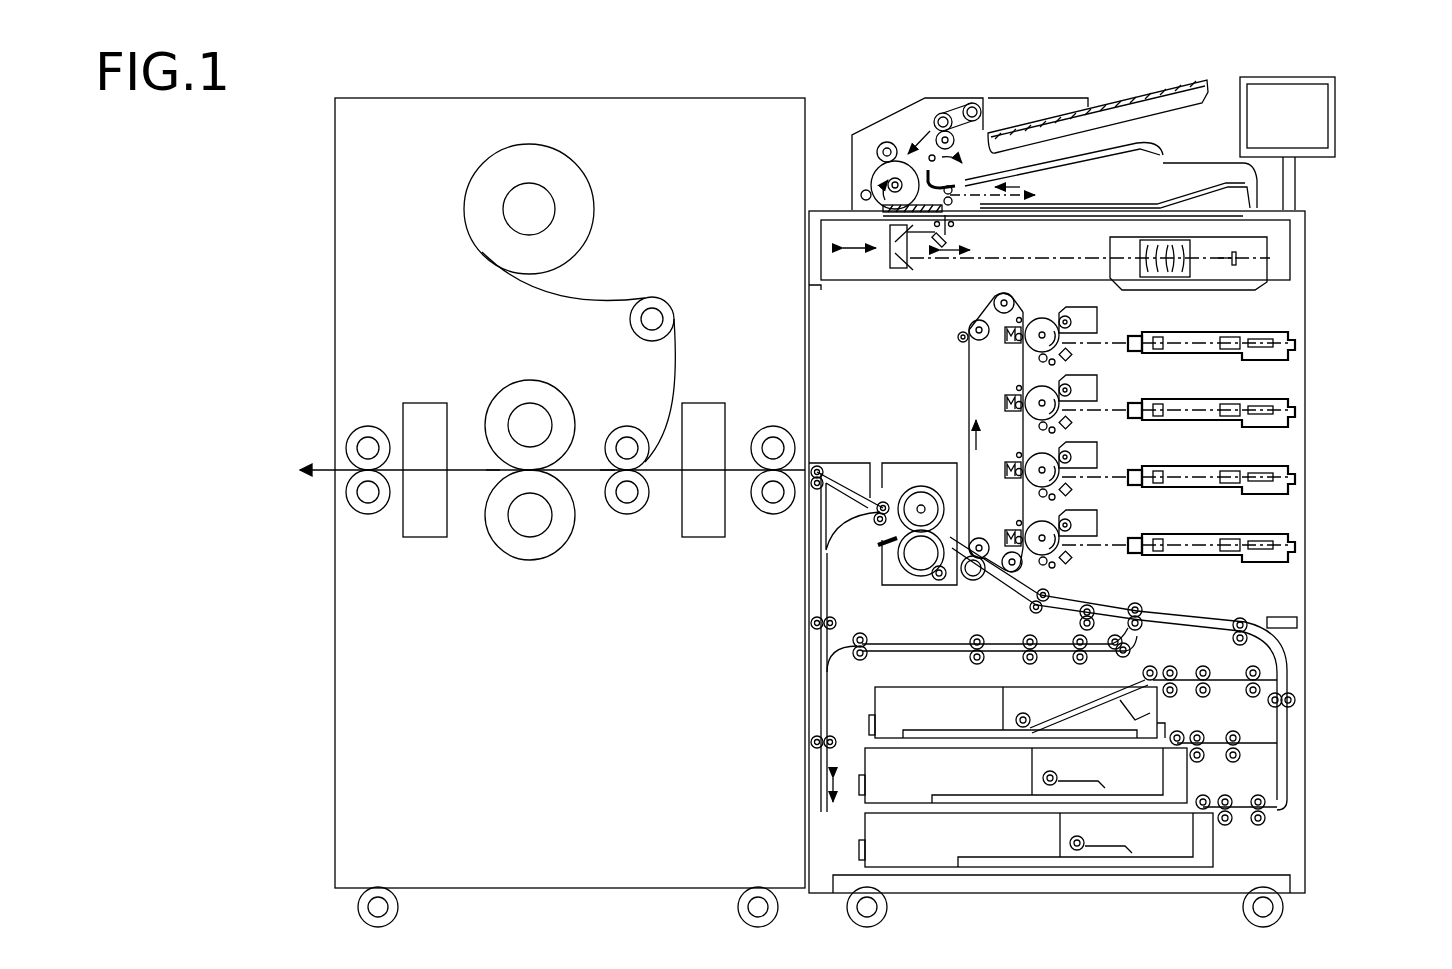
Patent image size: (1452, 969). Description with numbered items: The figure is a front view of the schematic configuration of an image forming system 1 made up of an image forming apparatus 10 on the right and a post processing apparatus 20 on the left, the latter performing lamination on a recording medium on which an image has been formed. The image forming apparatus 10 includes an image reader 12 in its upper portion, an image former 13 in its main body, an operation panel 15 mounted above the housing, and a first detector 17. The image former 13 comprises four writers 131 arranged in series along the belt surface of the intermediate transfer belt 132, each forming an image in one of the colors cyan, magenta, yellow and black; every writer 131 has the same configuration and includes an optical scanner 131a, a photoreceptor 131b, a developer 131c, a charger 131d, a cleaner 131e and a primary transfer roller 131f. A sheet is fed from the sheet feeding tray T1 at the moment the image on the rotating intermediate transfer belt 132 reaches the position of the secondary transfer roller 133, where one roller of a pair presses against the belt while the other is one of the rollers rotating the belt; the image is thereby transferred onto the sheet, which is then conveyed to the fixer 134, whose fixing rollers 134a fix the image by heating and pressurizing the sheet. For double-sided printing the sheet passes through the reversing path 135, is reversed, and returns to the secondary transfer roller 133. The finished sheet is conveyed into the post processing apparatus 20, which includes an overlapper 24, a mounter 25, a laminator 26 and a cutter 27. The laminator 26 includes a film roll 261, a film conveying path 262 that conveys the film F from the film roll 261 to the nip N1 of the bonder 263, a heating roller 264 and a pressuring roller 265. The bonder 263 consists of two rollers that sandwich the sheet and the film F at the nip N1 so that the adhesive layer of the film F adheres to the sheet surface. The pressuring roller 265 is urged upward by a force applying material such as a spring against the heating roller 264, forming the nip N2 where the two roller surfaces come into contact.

The image forming system 1 is at (1392, 208).
The image forming apparatus 10 is at (1222, 66).
The image reader 12 is at (850, 166).
The image former 13 is at (832, 366).
The operation panel 15 is at (1296, 77).
The first detector 17 is at (1300, 623).
The post processing apparatus 20 is at (398, 98).
The overlapper 24 is at (702, 537).
The mounter 25 is at (468, 168).
The laminator 26 is at (540, 562).
The cutter 27 is at (413, 403).
The film roll 261 is at (595, 194).
The film conveying path 262 is at (682, 318).
The bonder 263 is at (622, 514).
The heating roller 264 is at (518, 392).
The pressuring roller 265 is at (505, 549).
The writer 131 is at (1283, 327).
The optical scanner 131a is at (1178, 334).
The photoreceptor 131b is at (1037, 320).
The developer 131c is at (1097, 323).
The charger 131d is at (1072, 358).
The cleaner 131e is at (1044, 362).
The primary transfer roller 131f is at (1012, 341).
The intermediate transfer belt 132 is at (968, 413).
The secondary transfer roller 133 is at (1000, 580).
The fixer 134 is at (913, 462).
The fixing roller 134a is at (926, 557).
The reversing path 135 is at (818, 688).
The sheet feeding tray T1 is at (850, 849).
The film F is at (690, 386).
The nip N1 is at (604, 460).
The nip N2 is at (494, 460).